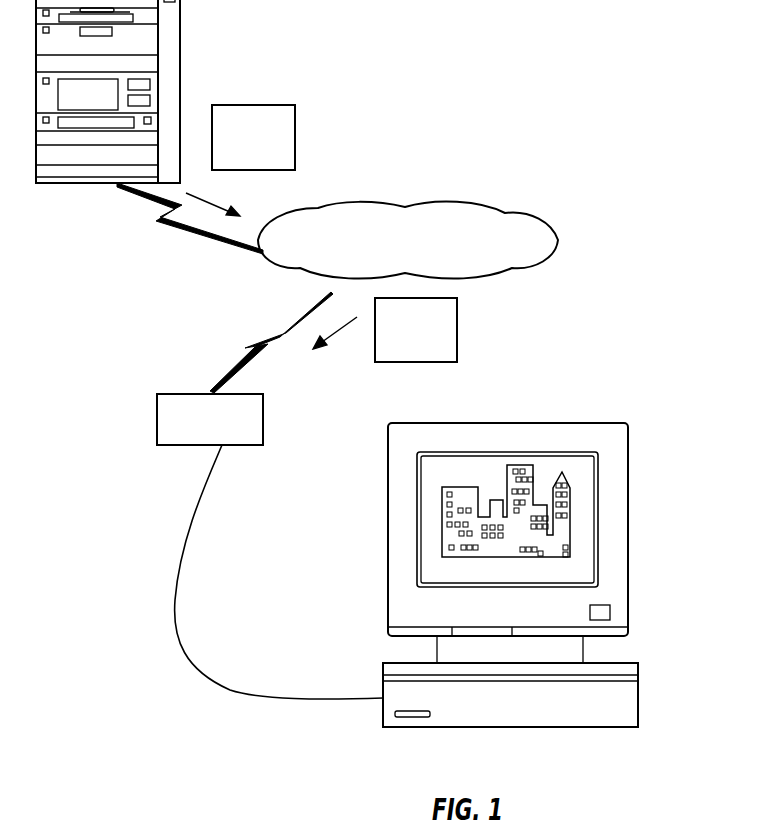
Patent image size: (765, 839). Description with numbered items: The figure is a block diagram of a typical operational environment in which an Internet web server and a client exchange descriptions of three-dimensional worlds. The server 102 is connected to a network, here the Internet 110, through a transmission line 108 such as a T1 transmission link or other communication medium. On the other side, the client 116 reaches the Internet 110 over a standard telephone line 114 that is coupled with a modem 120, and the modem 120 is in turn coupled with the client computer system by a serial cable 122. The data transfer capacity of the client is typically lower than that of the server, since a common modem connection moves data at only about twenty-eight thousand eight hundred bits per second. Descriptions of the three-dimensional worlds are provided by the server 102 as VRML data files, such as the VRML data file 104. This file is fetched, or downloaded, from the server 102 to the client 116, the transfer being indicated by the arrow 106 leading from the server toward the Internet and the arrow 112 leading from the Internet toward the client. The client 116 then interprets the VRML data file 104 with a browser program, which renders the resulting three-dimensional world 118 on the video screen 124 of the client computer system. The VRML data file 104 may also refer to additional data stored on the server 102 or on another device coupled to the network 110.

The server 102 is at (147, 117).
The VRML data file 104 is at (369, 215).
The arrow 106 is at (240, 196).
The transmission line 108 is at (190, 224).
The Internet 110 is at (408, 225).
The arrow 112 is at (353, 357).
The standard telephone line 114 is at (271, 342).
The client 116 is at (541, 714).
The 3D world 118 is at (567, 521).
The modem 120 is at (230, 438).
The serial cable 122 is at (279, 572).
The video screen 124 is at (540, 543).